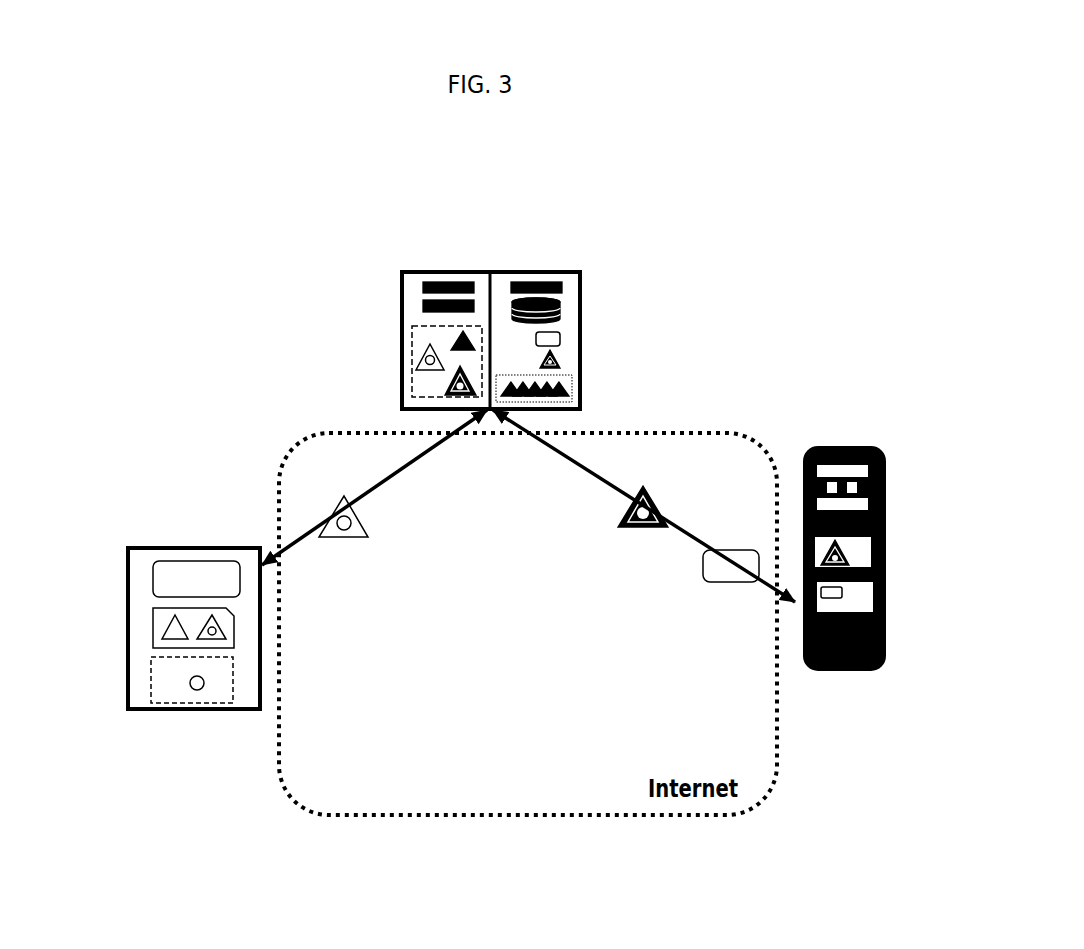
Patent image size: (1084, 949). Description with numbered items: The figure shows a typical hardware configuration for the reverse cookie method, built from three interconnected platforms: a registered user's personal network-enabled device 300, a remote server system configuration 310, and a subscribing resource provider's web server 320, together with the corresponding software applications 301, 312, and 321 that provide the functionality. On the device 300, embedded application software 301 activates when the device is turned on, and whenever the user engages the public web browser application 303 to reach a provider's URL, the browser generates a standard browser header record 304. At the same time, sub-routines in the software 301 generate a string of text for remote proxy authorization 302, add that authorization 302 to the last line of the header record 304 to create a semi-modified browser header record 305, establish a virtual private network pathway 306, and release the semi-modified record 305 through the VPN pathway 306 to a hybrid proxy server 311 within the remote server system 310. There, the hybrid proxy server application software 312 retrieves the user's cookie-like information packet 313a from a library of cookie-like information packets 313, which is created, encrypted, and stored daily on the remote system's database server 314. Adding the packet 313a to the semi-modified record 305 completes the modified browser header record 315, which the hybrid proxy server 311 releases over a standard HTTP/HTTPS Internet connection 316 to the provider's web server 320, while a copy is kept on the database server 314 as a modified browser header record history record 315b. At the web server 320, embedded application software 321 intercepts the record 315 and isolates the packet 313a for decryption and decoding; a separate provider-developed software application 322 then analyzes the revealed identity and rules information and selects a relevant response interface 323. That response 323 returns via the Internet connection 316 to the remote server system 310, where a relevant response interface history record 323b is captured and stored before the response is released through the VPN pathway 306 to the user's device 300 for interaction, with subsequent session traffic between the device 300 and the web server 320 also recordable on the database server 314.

The registered personal network-enabled device 300 is at (152, 633).
The embedded application software 301 is at (151, 681).
The remote proxy authorization and address 302 is at (197, 690).
The public web browser application 303 is at (153, 628).
The standard browser header record 304 is at (167, 607).
The semi-modified browser header record 305 is at (430, 372).
The virtual private network (VPN) pathway 306 is at (405, 473).
The remote server system configuration 310 is at (617, 362).
The hybrid proxy server 311 is at (403, 341).
The hybrid proxy server application software 312 is at (412, 360).
The library of cookie-like information packets 313 is at (572, 388).
The cookie-like information packet 313a is at (455, 345).
The remote system's database server 314 is at (580, 311).
The modified browser header record 315 is at (463, 397).
The modified browser header record history record 315b is at (560, 360).
The standard Internet connection—HTTP/HTTPS 316 is at (600, 480).
The subscribing resource provider's web server 320 is at (881, 584).
The embedded application software 321 is at (860, 556).
The software application 322 is at (852, 595).
The relevant response interface 323 is at (825, 598).
The relevant response interface history record 323b is at (560, 339).